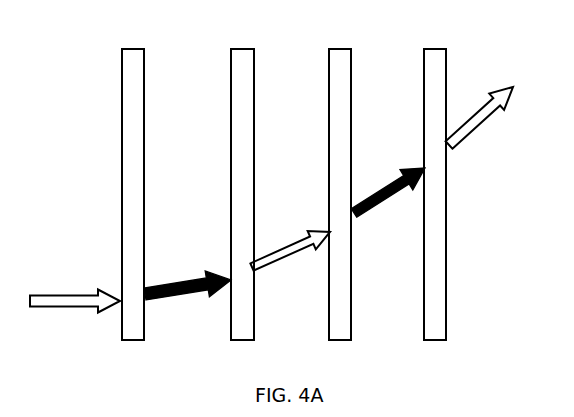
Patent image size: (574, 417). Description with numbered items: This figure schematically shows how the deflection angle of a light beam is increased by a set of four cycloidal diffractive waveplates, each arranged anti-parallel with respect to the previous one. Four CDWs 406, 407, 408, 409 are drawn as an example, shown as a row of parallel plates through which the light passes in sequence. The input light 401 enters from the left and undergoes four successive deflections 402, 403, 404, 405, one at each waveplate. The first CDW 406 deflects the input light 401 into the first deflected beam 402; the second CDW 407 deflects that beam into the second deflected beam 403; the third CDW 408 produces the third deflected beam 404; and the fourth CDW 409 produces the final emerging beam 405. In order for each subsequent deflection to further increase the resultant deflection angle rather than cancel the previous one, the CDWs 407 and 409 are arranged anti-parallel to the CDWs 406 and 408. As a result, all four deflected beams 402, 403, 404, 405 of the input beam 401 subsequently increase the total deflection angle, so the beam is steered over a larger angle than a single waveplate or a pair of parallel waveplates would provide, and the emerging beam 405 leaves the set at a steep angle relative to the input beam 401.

The input light 401 is at (70, 302).
The first deflected beam 402 is at (197, 292).
The second deflected beam 403 is at (298, 235).
The third deflected beam 404 is at (383, 206).
The fourth deflected beam 405 is at (477, 127).
The first cycloidal diffractive waveplate 406 is at (121, 65).
The second cycloidal diffractive waveplate 407 is at (230, 62).
The third cycloidal diffractive waveplate 408 is at (328, 70).
The fourth cycloidal diffractive waveplate 409 is at (410, 66).